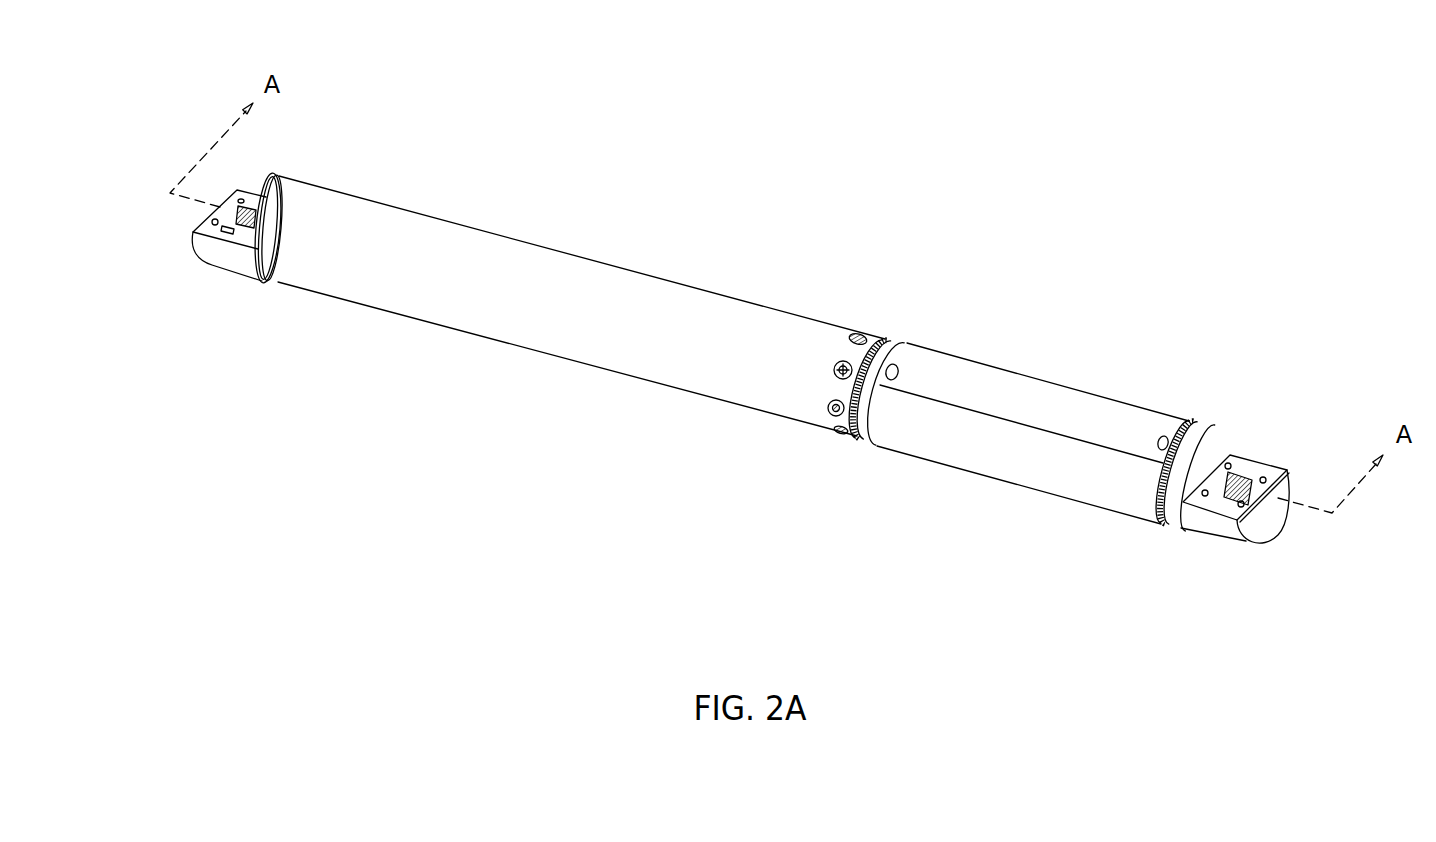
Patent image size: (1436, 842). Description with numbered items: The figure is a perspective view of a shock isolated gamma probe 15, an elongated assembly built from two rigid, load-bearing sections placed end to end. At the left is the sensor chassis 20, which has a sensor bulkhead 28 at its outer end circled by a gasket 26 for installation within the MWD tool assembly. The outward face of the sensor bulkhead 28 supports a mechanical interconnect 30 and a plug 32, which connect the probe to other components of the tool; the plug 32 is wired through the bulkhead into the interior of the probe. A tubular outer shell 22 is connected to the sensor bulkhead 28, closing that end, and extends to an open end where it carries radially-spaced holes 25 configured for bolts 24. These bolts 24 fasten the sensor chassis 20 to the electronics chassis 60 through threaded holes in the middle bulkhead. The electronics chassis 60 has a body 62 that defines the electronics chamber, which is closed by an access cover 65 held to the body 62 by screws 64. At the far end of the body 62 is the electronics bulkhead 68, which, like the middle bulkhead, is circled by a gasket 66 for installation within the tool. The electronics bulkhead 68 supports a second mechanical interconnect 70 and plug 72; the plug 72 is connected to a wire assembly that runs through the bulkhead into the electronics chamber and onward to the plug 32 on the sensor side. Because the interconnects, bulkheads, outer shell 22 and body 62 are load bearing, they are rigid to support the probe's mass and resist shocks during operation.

The gamma probe 15 is at (683, 222).
The sensor chassis 20 is at (452, 217).
The outer shell 22 is at (548, 262).
The bolts 24 is at (857, 337).
The radially-spaced holes 25 is at (836, 365).
The gasket 26 is at (292, 178).
The sensor bulkhead 28 is at (271, 181).
The mechanical interconnect 30 is at (214, 234).
The plug 32 is at (208, 260).
The electronics chassis 60 is at (913, 452).
The body 62 is at (963, 447).
The screws 64 is at (899, 368).
The access cover 65 is at (967, 363).
The gasket 66 is at (900, 340).
The electronics bulkhead 68 is at (1220, 447).
The mechanical interconnect 70 is at (1243, 463).
The plug 72 is at (1187, 520).